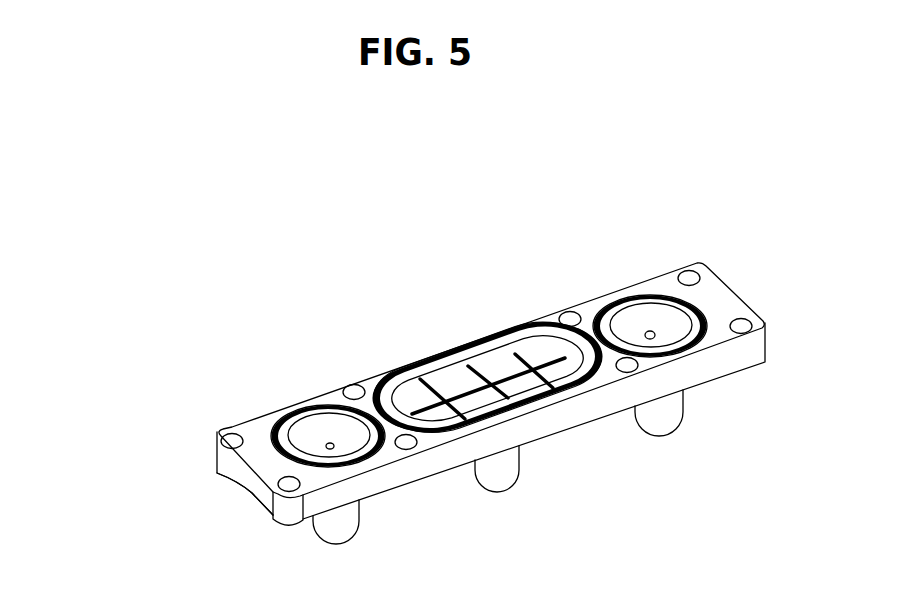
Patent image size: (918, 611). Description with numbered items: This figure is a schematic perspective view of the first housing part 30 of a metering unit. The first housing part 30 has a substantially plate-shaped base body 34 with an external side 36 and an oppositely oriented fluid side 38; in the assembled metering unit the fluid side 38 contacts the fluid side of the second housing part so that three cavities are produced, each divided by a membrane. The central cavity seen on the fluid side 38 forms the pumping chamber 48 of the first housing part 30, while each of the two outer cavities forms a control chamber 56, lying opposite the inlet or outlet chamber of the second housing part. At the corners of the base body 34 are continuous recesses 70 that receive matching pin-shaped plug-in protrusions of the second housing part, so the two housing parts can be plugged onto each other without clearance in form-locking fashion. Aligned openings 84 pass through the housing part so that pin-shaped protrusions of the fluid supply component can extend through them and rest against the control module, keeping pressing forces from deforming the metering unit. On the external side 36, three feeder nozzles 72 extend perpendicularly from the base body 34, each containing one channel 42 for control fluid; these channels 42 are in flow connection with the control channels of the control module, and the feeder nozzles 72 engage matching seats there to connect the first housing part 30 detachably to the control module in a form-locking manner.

The first housing part 30 is at (130, 452).
The plate-shaped base body 34 is at (765, 334).
The external side 36 is at (273, 524).
The fluid side 38 is at (580, 304).
The channel 42 is at (330, 446).
The pumping chamber 48 is at (448, 368).
The control chamber 56 is at (306, 425).
The continuous recess 70 is at (689, 276).
The feeder nozzle 72 is at (346, 523).
The opening 84 is at (349, 388).